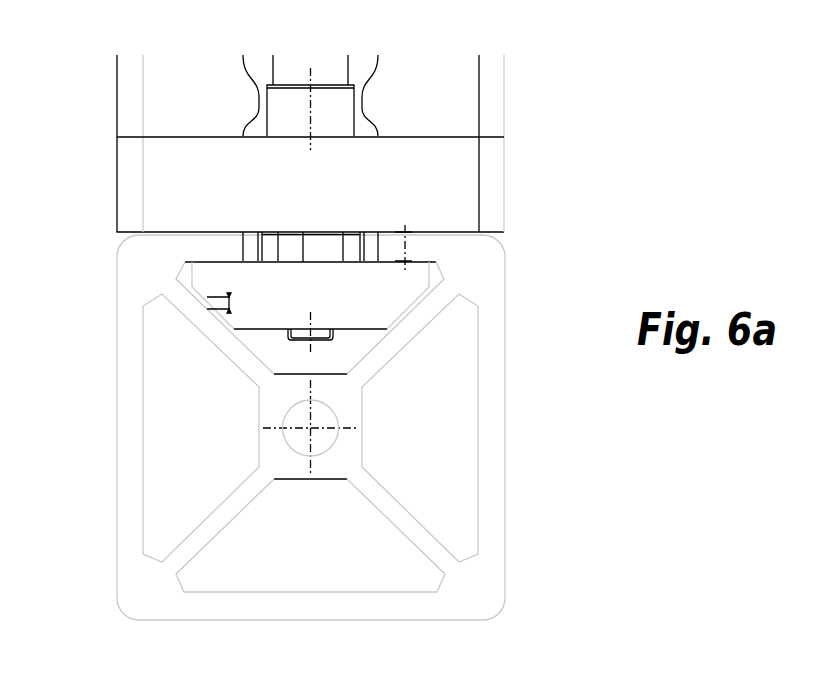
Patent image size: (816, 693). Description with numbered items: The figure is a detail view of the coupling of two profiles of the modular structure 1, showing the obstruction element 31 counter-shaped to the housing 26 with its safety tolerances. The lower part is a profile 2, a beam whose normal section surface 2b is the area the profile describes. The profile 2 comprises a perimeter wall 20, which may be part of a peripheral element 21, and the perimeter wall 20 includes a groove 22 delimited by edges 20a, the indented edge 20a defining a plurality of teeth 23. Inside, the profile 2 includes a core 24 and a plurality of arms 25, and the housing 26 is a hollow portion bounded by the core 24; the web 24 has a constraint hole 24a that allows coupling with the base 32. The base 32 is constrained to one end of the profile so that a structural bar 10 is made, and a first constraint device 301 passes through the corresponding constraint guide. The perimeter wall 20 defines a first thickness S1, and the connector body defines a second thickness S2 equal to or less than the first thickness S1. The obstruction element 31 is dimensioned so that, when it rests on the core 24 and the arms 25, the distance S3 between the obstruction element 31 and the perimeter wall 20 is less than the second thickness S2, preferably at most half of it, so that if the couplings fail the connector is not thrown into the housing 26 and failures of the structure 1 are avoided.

The modular structure 1 is at (583, 153).
The profile 2 is at (527, 463).
The normal section surface 2b is at (128, 483).
The structural bar 10 is at (70, 127).
The perimeter wall 20 is at (172, 248).
The edges 20a is at (243, 76).
The peripheral element 21 is at (272, 620).
The groove 22 is at (258, 70).
The teeth 23 is at (364, 104).
The core 24 is at (345, 400).
The constraint hole 24a is at (332, 437).
The arms 25 is at (383, 505).
The housing 26 is at (201, 428).
The obstruction element 31 is at (310, 318).
The base 32 is at (310, 168).
The first constraint device 301 is at (334, 122).
The first thickness S1 is at (414, 247).
The second thickness S2 is at (317, 251).
The distance S3 is at (232, 305).